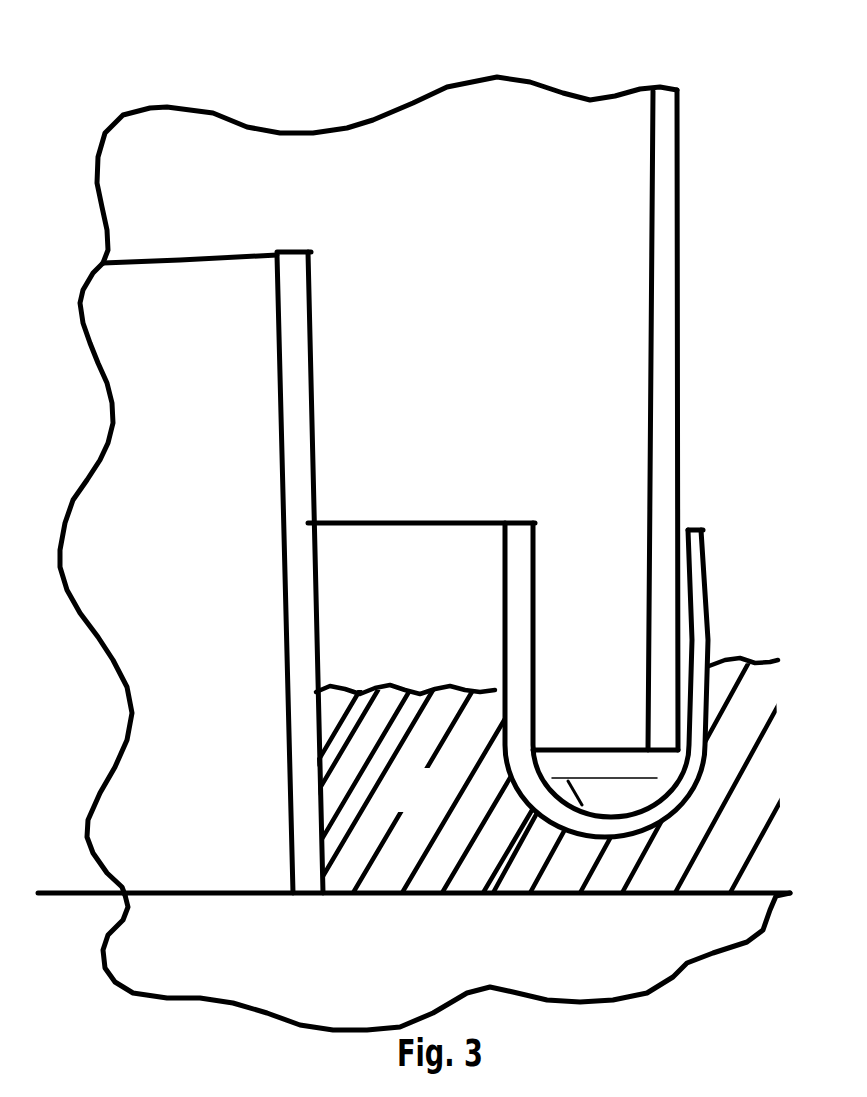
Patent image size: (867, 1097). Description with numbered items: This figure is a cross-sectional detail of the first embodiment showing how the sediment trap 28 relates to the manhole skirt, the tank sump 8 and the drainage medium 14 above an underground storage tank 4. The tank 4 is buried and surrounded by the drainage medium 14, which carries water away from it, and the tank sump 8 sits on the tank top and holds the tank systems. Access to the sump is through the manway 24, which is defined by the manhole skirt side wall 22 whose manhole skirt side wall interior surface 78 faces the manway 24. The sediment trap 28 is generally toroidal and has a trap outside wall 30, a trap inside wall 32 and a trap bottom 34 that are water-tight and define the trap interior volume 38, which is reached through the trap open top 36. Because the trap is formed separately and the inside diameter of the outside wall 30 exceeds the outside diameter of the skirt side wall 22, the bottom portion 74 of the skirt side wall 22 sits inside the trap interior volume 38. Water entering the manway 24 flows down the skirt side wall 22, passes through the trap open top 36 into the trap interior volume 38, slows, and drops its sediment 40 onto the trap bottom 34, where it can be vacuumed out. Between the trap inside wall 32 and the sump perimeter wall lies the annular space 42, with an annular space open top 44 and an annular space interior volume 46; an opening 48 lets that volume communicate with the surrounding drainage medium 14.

The underground storage tank 4 is at (437, 951).
The tank sump 8 is at (153, 522).
The drainage medium 14 is at (438, 807).
The manhole skirt side wall 22 is at (676, 275).
The manway 24 is at (412, 272).
The sediment trap 28 is at (705, 534).
The trap outside wall 30 is at (710, 602).
The trap inside wall 32 is at (512, 538).
The trap bottom 34 is at (568, 812).
The trap open top 36 is at (603, 523).
The trap interior volume 38 is at (575, 693).
The sediment 40 is at (597, 781).
The annular space 42 is at (378, 630).
The annular space open top 44 is at (377, 525).
The annular space interior volume 46 is at (352, 590).
The opening 48 is at (293, 887).
The bottom portion 74 is at (660, 723).
The manhole skirt side wall interior surface 78 is at (648, 223).